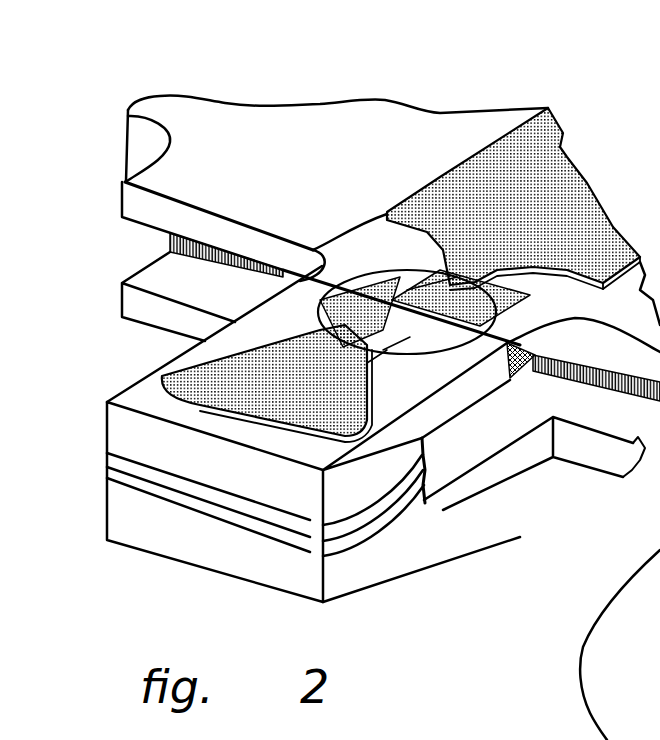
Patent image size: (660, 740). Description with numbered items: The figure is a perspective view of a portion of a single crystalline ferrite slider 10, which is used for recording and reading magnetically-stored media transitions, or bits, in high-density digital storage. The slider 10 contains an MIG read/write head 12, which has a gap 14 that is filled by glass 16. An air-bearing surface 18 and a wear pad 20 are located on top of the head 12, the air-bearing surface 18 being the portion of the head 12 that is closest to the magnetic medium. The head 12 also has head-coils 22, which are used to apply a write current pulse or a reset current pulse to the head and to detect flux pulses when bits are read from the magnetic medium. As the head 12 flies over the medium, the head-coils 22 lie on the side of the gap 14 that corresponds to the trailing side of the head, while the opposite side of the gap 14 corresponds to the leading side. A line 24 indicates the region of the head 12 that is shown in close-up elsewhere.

The single crystalline ferrite slider 10 is at (283, 87).
The MIG read/write head 12 is at (445, 547).
The gap 14 is at (396, 290).
The glass 16 is at (516, 373).
The air-bearing surface 18 is at (530, 152).
The wear pad 20 is at (253, 363).
The head-coils 22 is at (193, 517).
The line indicating region of head 24 is at (530, 302).